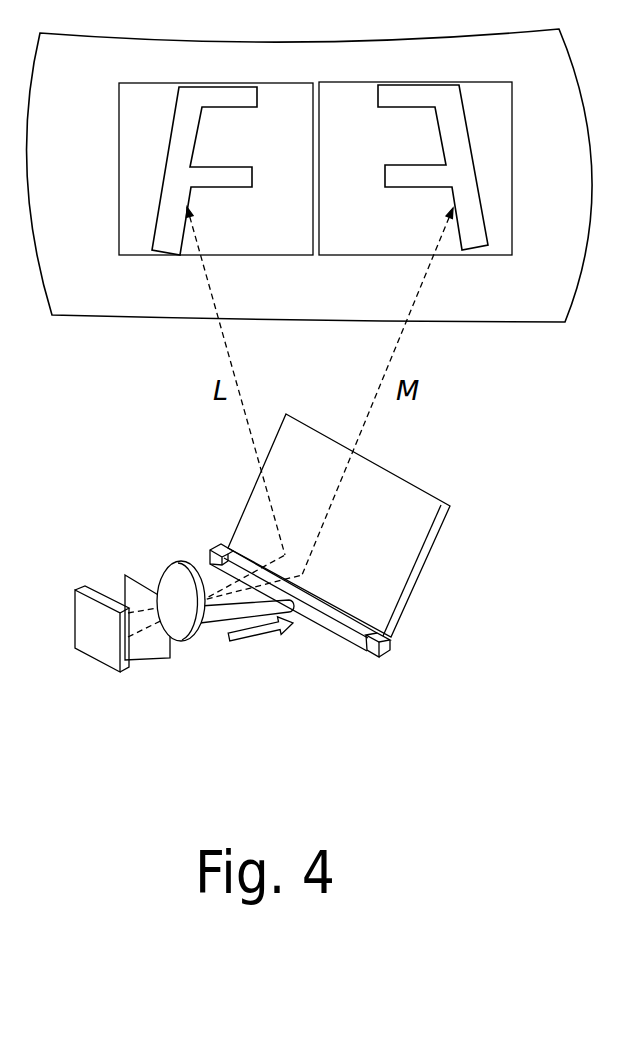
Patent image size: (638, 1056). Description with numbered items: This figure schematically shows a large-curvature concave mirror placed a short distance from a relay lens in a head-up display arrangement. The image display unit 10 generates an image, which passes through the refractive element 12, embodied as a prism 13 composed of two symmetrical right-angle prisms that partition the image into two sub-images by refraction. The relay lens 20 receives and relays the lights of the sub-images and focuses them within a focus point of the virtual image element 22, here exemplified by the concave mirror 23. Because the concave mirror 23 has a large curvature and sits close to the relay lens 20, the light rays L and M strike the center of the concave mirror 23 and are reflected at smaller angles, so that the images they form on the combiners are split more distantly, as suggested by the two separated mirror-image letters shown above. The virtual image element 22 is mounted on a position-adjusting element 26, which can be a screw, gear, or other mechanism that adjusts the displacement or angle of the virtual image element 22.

The image display unit 10 is at (92, 652).
The refractive element 12 is at (152, 665).
The prism 13 is at (170, 641).
The relay lens 20 is at (196, 637).
The virtual image element 22 is at (435, 575).
The concave mirror 23 is at (408, 600).
The position-adjusting element 26 is at (380, 655).